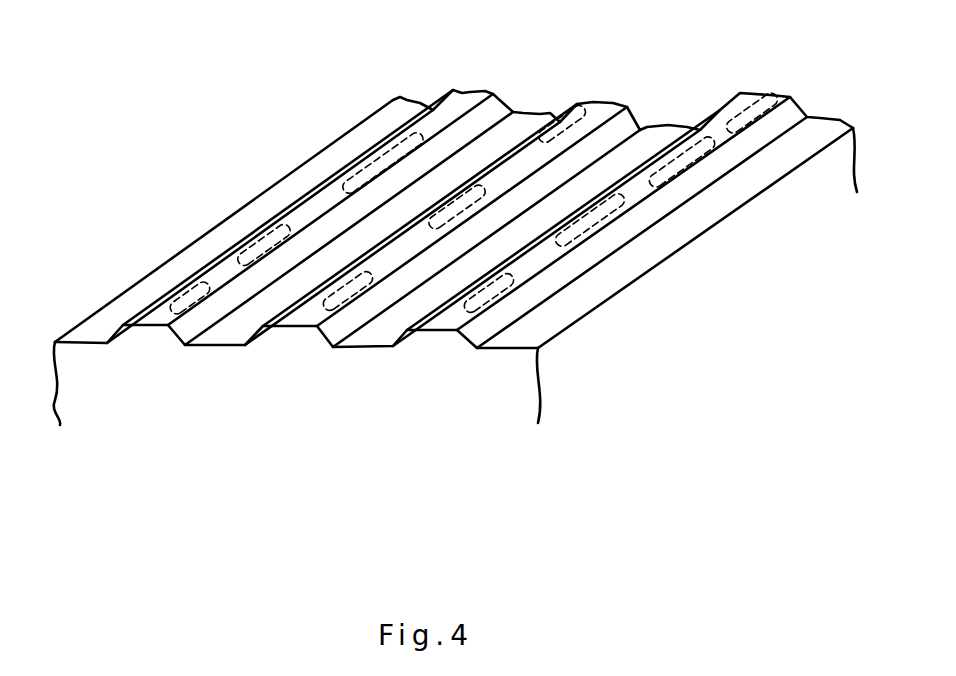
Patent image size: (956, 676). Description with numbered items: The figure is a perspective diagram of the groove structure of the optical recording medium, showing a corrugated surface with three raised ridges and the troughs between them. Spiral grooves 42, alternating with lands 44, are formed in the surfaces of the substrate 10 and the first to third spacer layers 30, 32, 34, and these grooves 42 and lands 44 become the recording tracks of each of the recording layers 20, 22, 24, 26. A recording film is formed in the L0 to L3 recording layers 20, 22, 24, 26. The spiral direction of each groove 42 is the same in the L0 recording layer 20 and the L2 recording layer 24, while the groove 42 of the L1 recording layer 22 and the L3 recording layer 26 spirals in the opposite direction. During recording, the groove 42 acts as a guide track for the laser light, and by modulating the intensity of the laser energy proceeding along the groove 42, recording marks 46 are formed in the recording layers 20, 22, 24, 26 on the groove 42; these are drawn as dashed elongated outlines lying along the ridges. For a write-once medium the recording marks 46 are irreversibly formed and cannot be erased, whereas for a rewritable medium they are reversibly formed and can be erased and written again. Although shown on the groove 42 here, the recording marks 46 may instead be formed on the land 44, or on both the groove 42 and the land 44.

The substrate 10 is at (455, 285).
The first spacer layer 30 is at (455, 285).
The second spacer layer 32 is at (455, 285).
The third spacer layer 34 is at (455, 285).
The L0 recording layer 20 is at (445, 285).
The L1 recording layer 22 is at (445, 285).
The L2 recording layer 24 is at (445, 285).
The L3 recording layer 26 is at (445, 285).
The groove 42 is at (440, 322).
The land 44 is at (518, 335).
The recording mark 46 is at (717, 143).